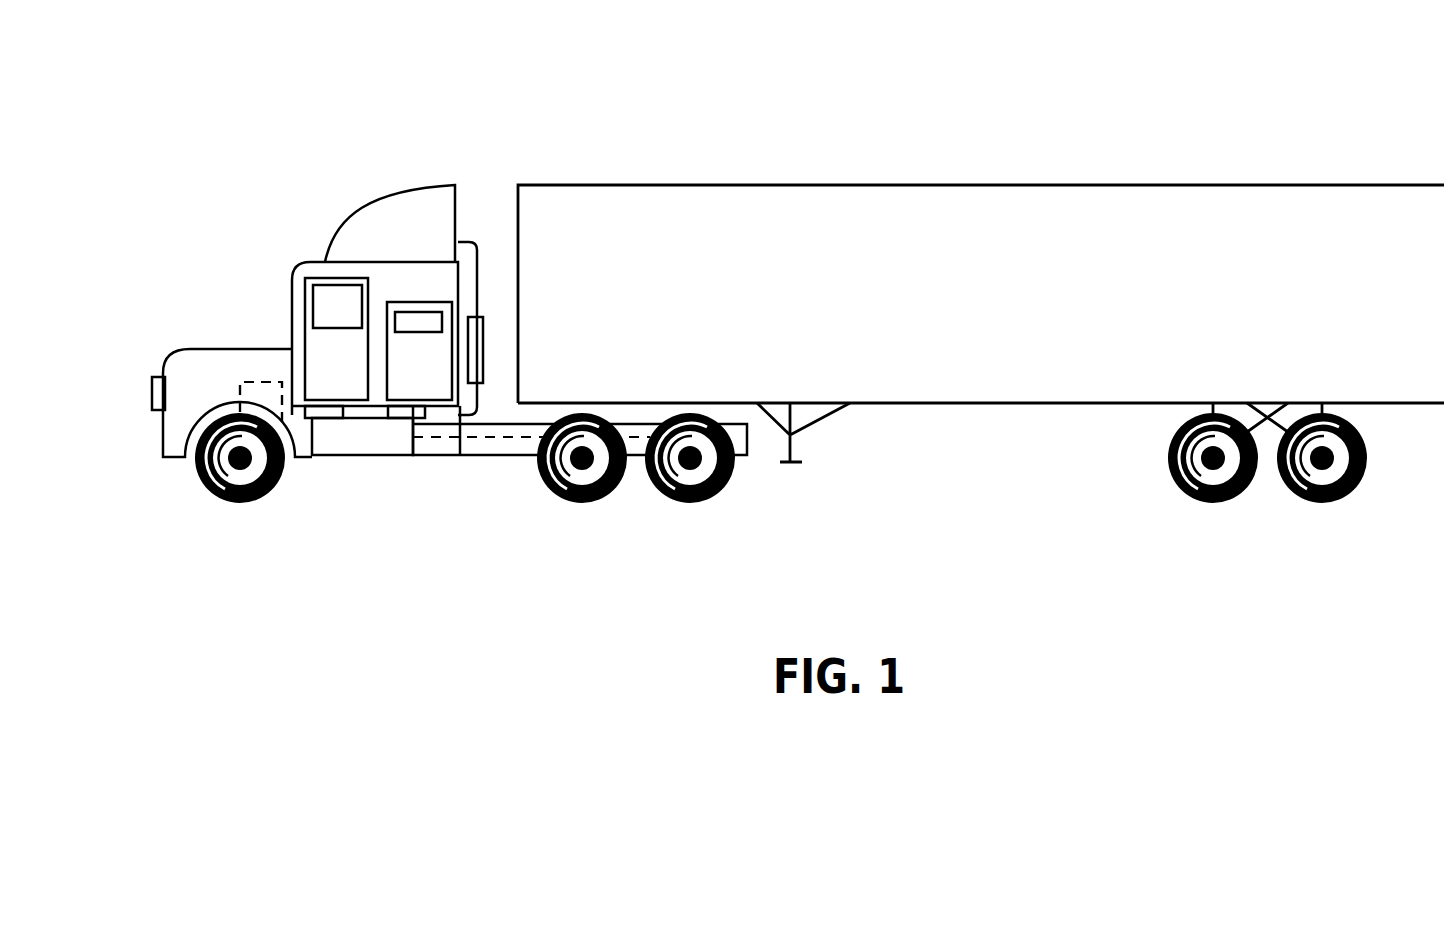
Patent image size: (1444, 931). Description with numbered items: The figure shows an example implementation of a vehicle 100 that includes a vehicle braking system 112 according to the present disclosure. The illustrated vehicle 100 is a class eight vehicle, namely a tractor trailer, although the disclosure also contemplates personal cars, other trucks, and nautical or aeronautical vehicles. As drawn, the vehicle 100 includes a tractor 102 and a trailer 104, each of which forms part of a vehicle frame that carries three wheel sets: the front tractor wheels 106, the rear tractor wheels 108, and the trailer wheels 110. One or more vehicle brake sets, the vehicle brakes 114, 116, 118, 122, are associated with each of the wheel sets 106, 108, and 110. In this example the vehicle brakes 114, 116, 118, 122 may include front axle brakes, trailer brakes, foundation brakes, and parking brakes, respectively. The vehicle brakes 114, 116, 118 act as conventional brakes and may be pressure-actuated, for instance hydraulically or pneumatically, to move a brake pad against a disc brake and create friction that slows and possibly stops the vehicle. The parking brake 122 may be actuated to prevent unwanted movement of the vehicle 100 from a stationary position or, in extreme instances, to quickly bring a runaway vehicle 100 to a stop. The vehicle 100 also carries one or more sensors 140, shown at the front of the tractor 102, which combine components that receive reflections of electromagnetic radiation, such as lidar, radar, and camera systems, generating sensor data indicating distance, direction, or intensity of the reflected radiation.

The vehicle 100 is at (1112, 52).
The tractor 102 is at (397, 187).
The trailer 104 is at (832, 185).
The front tractor wheels 106 is at (200, 507).
The rear tractor wheels 108 is at (623, 518).
The trailer wheels 110 is at (1271, 530).
The vehicle braking system 112 is at (352, 435).
The vehicle brake 114 is at (303, 425).
The vehicle brake 116 is at (483, 536).
The vehicle brake 118 is at (362, 523).
The parking brake 122 is at (484, 550).
The sensors 140 is at (150, 383).